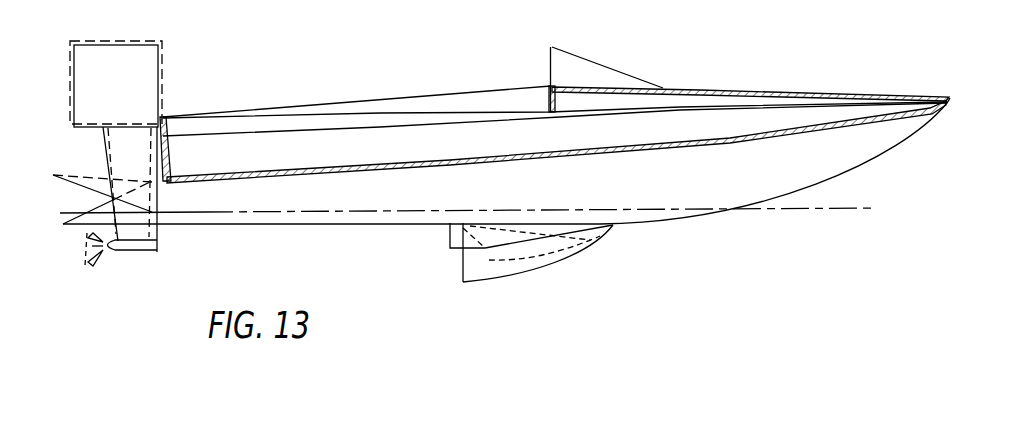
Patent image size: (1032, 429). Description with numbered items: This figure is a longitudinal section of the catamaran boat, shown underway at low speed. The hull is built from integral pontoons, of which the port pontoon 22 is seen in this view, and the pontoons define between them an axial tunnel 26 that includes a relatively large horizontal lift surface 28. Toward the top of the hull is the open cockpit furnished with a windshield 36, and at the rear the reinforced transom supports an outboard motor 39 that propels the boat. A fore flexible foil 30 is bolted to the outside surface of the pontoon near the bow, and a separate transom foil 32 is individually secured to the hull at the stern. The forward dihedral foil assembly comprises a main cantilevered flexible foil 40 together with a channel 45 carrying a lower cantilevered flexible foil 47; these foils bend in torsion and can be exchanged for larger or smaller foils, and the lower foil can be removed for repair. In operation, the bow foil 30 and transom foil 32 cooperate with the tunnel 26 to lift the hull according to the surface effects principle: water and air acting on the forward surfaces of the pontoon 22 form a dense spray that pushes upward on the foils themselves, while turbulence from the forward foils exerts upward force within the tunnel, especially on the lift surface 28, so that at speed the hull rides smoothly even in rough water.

The port pontoon 22 is at (807, 168).
The axial tunnel 26 is at (664, 194).
The lift surface 28 is at (588, 160).
The fore flexible foil 30 is at (531, 264).
The transom foil 32 is at (157, 243).
The windshield 36 is at (585, 68).
The outboard motor 39 is at (122, 107).
The main cantilevered flexible foil 40 is at (493, 235).
The channel 45 is at (603, 237).
The lower cantilevered flexible foil 47 is at (488, 265).